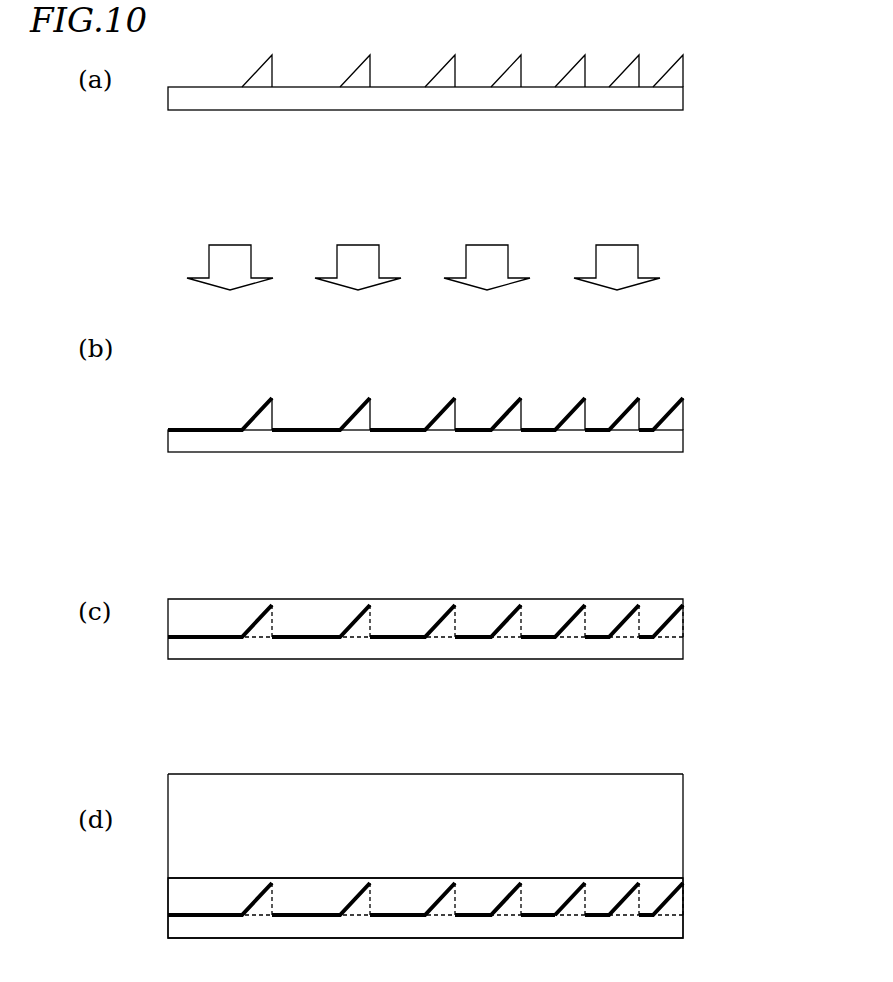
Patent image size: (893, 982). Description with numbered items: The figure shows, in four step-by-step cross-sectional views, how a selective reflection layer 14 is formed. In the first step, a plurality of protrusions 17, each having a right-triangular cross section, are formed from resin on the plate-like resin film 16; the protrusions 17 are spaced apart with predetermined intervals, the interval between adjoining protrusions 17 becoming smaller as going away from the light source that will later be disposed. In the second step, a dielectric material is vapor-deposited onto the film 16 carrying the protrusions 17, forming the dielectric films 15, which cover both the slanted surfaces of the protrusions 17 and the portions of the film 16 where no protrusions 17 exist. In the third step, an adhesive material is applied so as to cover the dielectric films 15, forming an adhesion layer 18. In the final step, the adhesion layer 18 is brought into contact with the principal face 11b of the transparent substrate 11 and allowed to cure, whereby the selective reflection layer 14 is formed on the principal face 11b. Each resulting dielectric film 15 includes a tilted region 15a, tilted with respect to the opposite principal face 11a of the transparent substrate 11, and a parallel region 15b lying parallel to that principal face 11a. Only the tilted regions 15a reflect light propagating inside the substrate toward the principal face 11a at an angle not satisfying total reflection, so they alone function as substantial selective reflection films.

The transparent substrate 11 is at (683, 821).
The principal face of transparent substrate 11a is at (508, 774).
The principal face of transparent substrate 11b is at (398, 878).
The selective reflection layer 14 is at (745, 878).
The dielectric film 15 is at (425, 640).
The tilted region 15a is at (571, 892).
The parallel region 15b is at (534, 912).
The film 16 is at (683, 99).
The protrusion 17 is at (683, 72).
The adhesion layer 18 is at (488, 608).